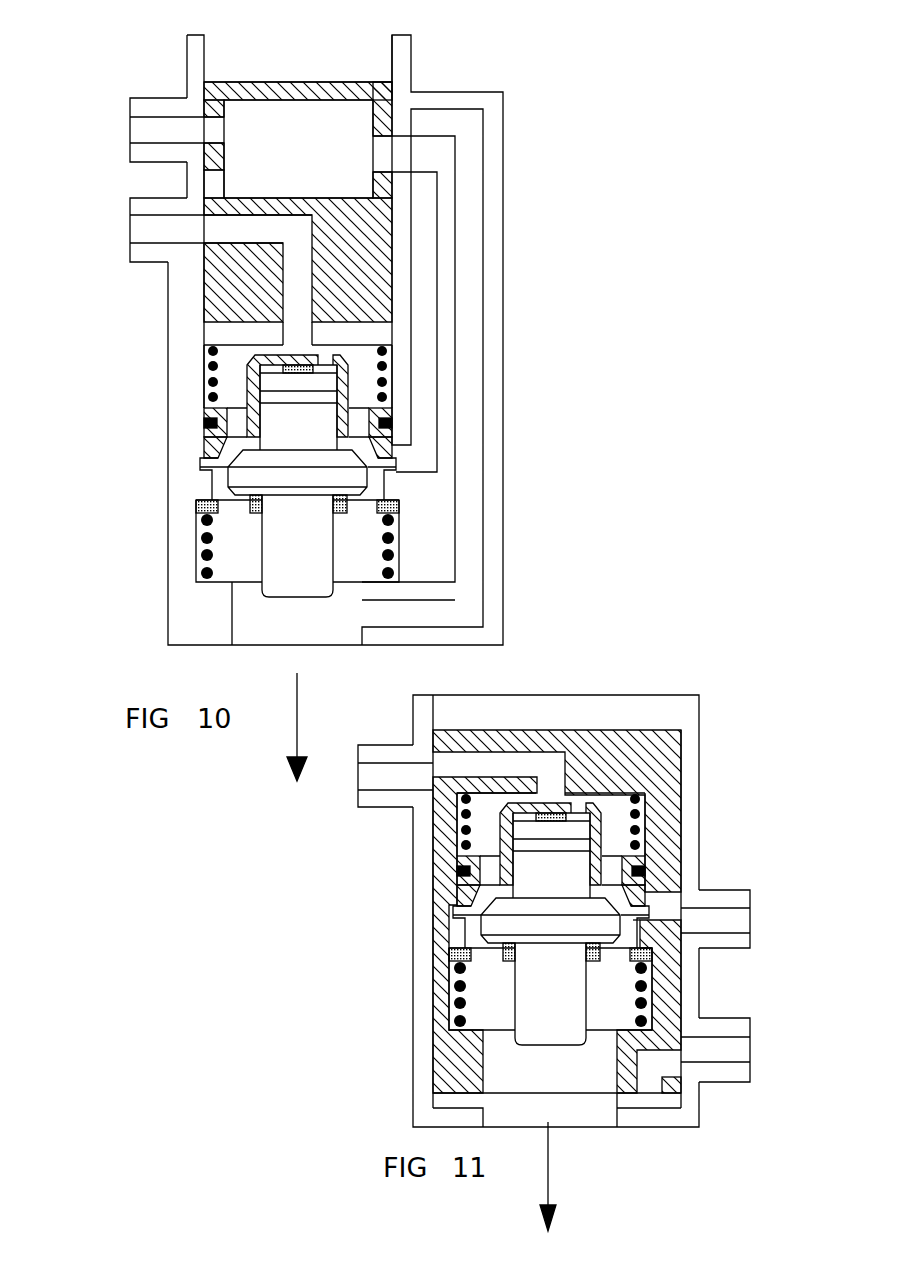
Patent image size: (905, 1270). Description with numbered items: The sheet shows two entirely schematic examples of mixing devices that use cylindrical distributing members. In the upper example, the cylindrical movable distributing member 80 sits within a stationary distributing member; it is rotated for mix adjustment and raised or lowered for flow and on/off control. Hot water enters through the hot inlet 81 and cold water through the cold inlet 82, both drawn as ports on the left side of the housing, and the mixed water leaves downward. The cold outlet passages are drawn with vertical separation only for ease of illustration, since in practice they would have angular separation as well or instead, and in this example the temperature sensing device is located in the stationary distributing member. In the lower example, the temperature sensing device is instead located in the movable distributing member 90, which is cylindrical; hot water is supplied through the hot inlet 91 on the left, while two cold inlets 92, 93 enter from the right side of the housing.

In FIG. 10, the cylindrical movable distributing member 80 is at (255, 92).
In FIG. 10, the hot inlet 81 is at (150, 232).
In FIG. 10, the cold inlet 82 is at (150, 130).
In FIG. 11, the movable distributing member 90 is at (596, 753).
In FIG. 11, the hot inlet 91 is at (375, 776).
In FIG. 11, the cold inlet 92 is at (722, 919).
In FIG. 11, the cold inlet 93 is at (732, 1046).